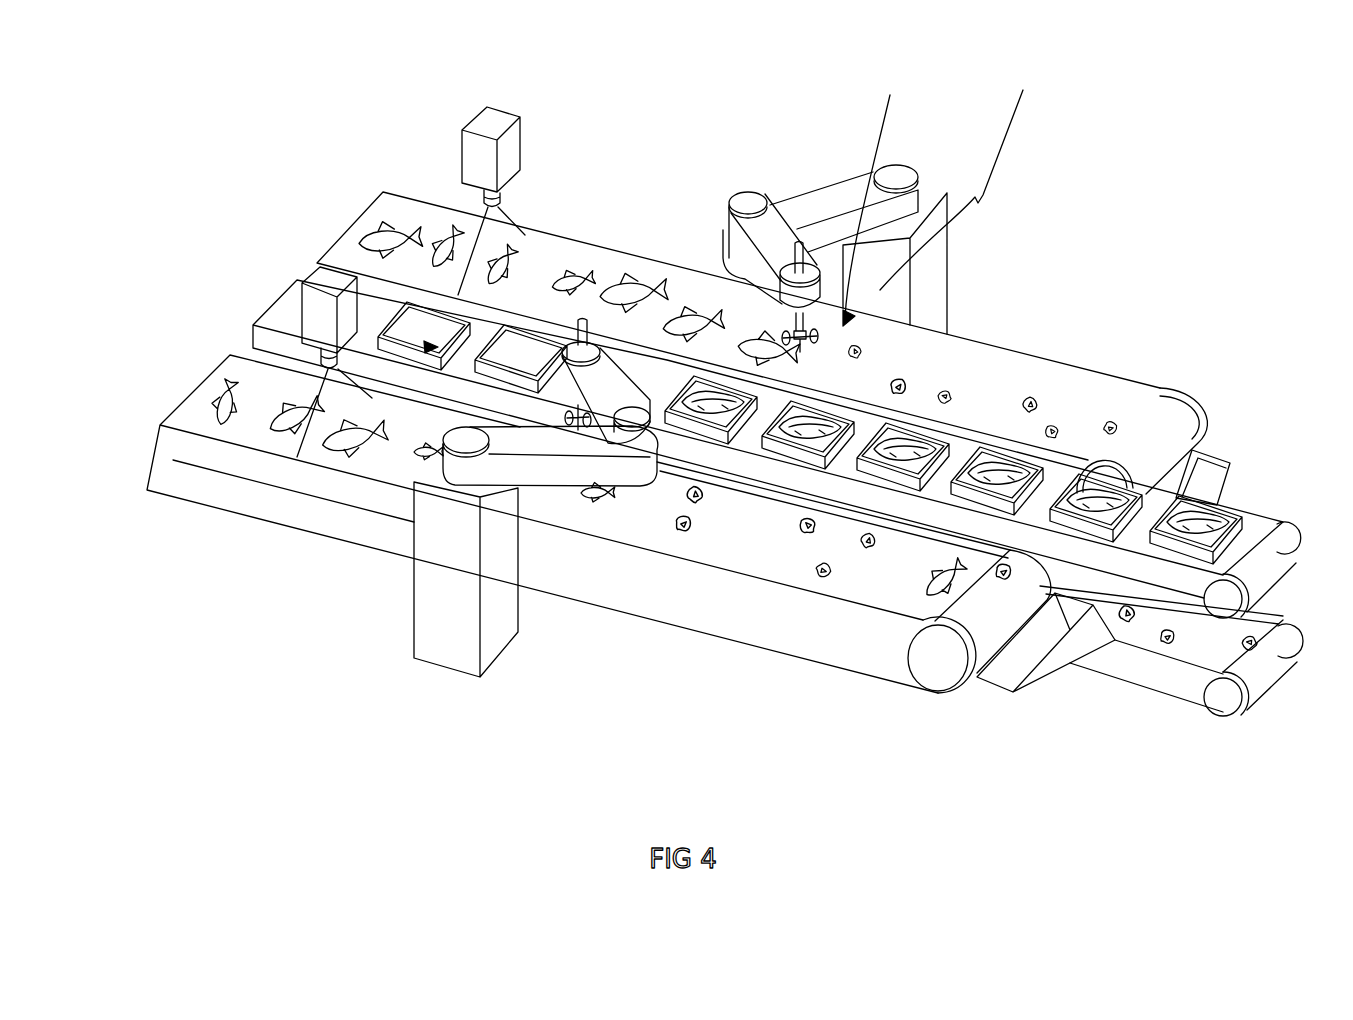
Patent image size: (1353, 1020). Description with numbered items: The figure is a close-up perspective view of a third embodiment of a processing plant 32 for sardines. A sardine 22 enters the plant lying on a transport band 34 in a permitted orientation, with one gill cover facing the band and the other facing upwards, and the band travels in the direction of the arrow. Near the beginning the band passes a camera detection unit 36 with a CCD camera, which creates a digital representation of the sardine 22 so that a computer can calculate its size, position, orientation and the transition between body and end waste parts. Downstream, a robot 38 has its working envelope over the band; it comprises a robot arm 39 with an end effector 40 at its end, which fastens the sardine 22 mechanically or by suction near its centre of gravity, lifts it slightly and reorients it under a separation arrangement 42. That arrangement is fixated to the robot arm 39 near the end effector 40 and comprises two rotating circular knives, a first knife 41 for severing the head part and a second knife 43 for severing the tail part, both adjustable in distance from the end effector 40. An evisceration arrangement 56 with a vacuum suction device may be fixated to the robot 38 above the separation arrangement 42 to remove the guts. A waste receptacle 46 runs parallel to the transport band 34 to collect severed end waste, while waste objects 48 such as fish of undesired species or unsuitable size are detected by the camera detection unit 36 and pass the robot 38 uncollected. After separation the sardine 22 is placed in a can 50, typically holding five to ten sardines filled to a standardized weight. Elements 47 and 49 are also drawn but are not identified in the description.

The sardine 22 is at (222, 393).
The processing plant 32 is at (709, 427).
The transport band 34 is at (543, 288).
The camera detection unit 36 is at (330, 283).
The robot 38 is at (784, 207).
The robot arm 39 is at (768, 238).
The end effector 40 is at (704, 207).
The first knife 41 is at (775, 332).
The separation arrangement 42 is at (945, 194).
The second knife 43 is at (862, 292).
The waste receptacle 46 is at (785, 396).
The chute 47 is at (1013, 670).
The waste object 48 is at (818, 568).
The output conveyor 49 is at (1237, 657).
The can 50 is at (810, 395).
The evisceration arrangement 56 is at (883, 337).